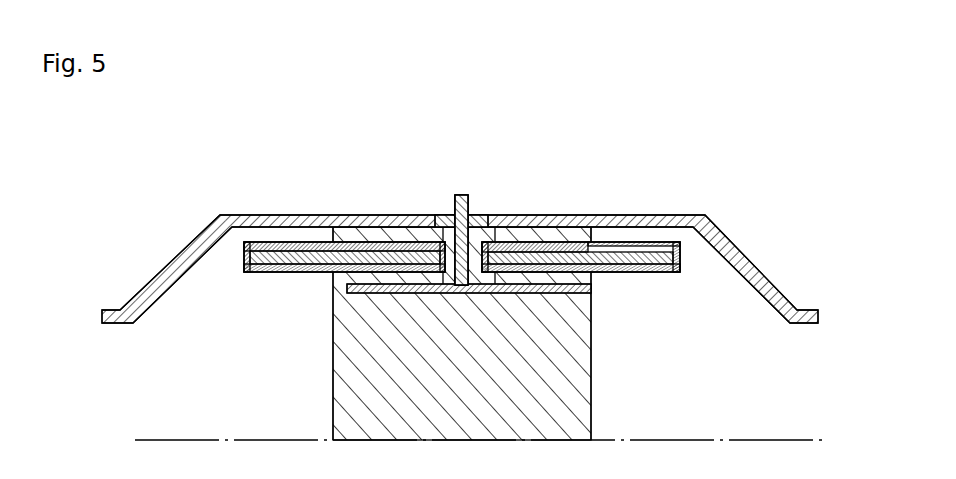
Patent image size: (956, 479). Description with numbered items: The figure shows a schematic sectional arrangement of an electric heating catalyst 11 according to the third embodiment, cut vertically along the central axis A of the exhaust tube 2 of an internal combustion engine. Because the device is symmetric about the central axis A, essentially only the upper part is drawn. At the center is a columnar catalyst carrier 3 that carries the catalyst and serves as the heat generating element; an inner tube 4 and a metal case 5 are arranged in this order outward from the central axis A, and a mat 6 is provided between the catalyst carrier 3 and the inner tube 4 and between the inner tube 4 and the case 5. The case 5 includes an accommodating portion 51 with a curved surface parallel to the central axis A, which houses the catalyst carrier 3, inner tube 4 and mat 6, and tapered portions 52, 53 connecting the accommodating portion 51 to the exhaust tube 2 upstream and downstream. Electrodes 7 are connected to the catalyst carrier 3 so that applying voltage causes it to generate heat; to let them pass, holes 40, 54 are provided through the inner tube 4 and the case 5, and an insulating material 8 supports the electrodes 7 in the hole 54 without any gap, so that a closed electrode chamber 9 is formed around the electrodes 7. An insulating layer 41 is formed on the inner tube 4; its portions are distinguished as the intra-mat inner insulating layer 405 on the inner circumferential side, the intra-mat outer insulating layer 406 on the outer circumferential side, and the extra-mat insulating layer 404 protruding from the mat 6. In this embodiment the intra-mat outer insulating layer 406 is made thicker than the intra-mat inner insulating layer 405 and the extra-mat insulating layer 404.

The electric heating catalyst 11 is at (684, 150).
The exhaust tube 2 is at (456, 246).
The catalyst carrier 3 is at (592, 345).
The inner tube 4 is at (316, 255).
The case 5 is at (579, 242).
The mat 6 is at (570, 242).
The electrode 7 is at (462, 195).
The insulating material 8 is at (481, 215).
The electrode chamber 9 is at (436, 232).
The hole 40 is at (478, 242).
The insulating layer 41 is at (244, 262).
The accommodating portion 51 is at (635, 215).
The tapered portion 52 is at (175, 258).
The tapered portion 53 is at (748, 259).
The hole 54 is at (445, 215).
The extra-mat insulating layer 404 is at (283, 273).
The intra-mat inner insulating layer 405 is at (347, 288).
The intra-mat outer insulating layer 406 is at (352, 242).
The central axis A is at (745, 440).